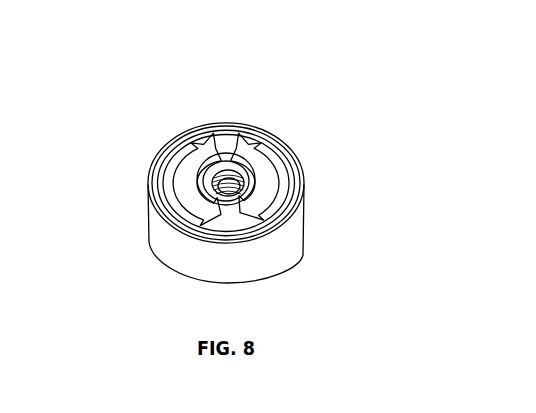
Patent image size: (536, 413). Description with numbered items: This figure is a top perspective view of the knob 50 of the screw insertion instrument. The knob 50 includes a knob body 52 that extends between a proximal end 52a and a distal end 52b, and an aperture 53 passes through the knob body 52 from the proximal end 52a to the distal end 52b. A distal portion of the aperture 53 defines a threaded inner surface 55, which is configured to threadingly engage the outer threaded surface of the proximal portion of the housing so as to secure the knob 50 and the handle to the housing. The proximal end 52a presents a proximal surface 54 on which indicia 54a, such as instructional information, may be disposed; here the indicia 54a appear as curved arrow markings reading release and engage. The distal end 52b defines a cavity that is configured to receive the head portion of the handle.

The knob 50 is at (136, 93).
The knob body 52 is at (149, 206).
The proximal end 52a is at (302, 197).
The distal end 52b is at (282, 260).
The aperture 53 is at (225, 165).
The proximal surface 54 is at (281, 153).
The indicia 54a is at (277, 168).
The threaded inner surface 55 is at (229, 182).